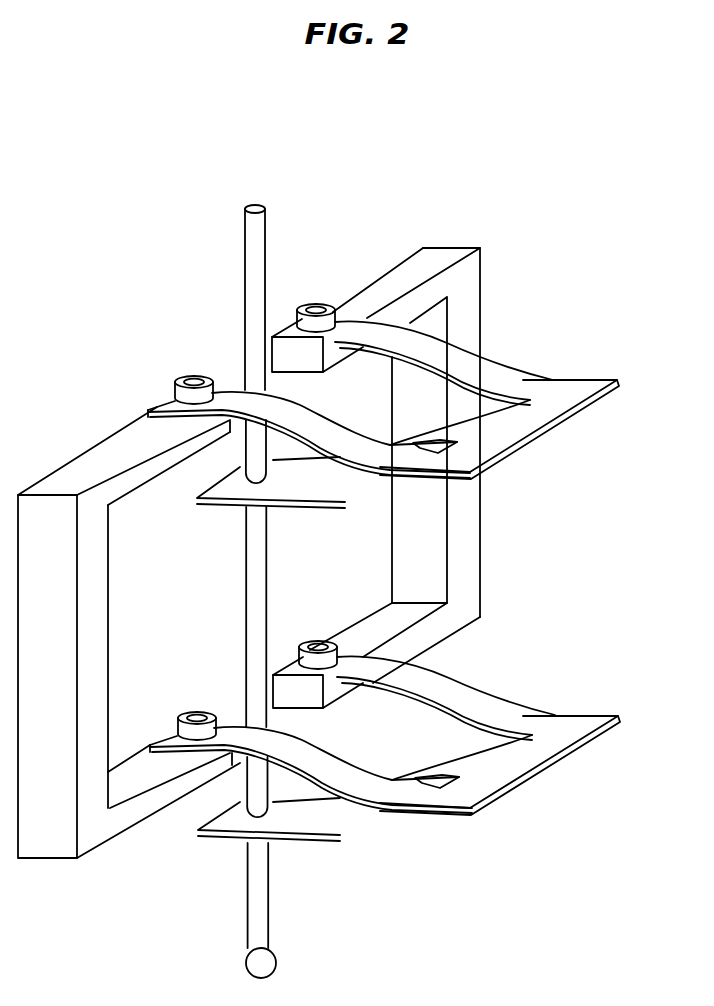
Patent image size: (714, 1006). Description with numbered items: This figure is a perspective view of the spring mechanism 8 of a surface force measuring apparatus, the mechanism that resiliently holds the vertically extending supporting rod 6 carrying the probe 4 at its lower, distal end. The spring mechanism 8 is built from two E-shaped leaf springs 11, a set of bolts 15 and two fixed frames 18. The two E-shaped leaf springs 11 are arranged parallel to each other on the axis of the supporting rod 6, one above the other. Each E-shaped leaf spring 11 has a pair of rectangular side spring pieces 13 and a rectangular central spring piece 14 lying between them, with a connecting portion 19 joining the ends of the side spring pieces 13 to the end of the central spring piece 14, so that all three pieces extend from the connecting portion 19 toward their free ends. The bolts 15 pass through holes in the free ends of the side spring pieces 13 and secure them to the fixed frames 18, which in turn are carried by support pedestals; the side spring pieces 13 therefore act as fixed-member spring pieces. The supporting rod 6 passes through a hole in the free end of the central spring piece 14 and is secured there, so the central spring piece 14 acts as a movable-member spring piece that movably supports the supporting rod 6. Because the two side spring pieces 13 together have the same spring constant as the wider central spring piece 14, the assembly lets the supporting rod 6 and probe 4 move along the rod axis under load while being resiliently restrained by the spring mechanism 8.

The probe 4 is at (279, 963).
The supporting rod 6 is at (258, 877).
The spring mechanism 8 is at (450, 218).
The E-shaped leaf spring 11 is at (518, 363).
The side spring piece 13 is at (461, 362).
The central spring piece 14 is at (300, 487).
The bolt 15 is at (313, 303).
The fixed frame 18 is at (78, 455).
The connecting portion 19 is at (513, 425).